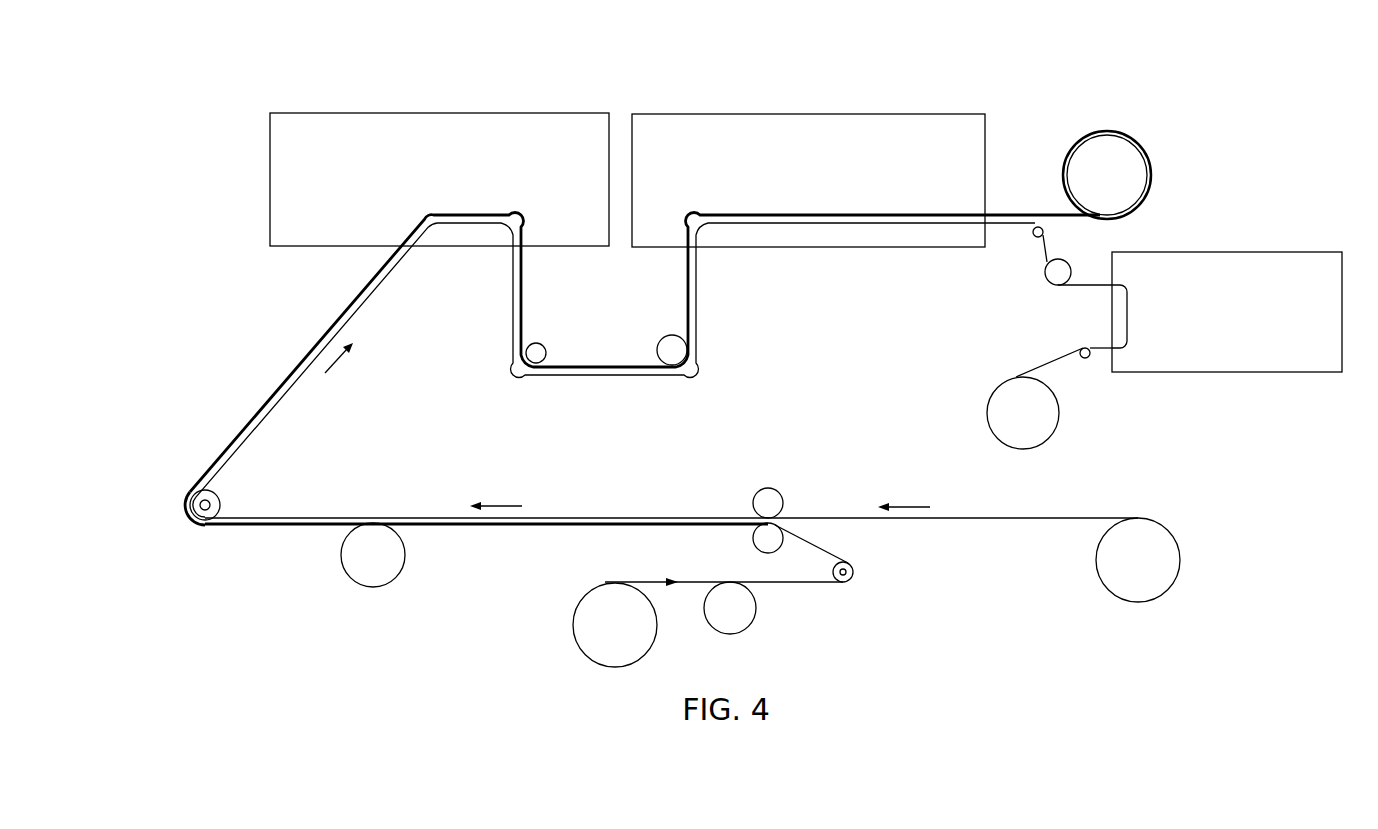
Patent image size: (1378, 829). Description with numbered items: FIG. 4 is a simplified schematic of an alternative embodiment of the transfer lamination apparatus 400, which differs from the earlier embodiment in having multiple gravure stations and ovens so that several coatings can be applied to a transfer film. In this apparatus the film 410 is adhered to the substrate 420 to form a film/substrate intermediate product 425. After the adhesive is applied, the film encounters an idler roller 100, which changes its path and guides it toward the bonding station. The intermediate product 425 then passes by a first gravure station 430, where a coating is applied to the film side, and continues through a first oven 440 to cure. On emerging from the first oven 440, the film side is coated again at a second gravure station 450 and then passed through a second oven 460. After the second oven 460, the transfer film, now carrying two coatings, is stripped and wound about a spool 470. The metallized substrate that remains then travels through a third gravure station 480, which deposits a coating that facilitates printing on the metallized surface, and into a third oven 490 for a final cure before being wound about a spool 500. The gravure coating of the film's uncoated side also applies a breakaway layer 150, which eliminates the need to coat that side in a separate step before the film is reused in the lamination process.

The idler roller 100 is at (219, 504).
The breakaway layer 150 is at (252, 525).
The apparatus 400 is at (948, 74).
The film 410 is at (800, 584).
The substrate 420 is at (840, 516).
The film/substrate intermediate product 425 is at (601, 516).
The first gravure station 430 is at (404, 568).
The first oven 440 is at (305, 246).
The second gravure station 450 is at (658, 342).
The second oven 460 is at (905, 247).
The spool 470 is at (1150, 160).
The third gravure station 480 is at (1067, 264).
The third oven 490 is at (1228, 372).
The spool 500 is at (1058, 428).